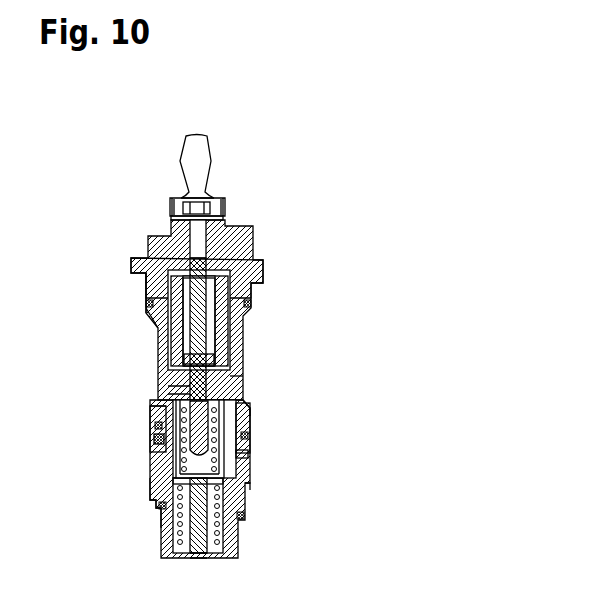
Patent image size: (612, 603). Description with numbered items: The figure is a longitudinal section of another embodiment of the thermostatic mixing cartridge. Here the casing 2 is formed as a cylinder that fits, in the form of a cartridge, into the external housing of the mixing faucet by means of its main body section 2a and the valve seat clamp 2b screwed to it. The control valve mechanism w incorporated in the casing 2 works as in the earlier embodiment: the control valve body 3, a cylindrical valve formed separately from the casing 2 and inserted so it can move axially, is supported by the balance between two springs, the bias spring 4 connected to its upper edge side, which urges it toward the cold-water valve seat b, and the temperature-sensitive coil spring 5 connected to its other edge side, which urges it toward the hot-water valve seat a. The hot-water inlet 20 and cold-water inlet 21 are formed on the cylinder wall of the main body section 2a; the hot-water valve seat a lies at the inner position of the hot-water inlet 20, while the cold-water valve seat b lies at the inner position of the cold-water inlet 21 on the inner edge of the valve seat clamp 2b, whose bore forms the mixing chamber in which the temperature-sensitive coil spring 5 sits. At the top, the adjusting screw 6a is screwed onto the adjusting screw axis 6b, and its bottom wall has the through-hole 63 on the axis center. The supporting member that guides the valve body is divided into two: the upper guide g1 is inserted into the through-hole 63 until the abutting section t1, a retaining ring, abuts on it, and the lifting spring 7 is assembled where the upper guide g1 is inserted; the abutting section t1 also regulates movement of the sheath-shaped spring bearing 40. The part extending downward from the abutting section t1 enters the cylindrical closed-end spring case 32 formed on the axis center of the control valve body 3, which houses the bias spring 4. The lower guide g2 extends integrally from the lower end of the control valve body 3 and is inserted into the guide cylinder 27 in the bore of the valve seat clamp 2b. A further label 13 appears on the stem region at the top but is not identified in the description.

The valve stem 13 is at (230, 262).
The adjusting screw axis 6b is at (238, 278).
The casing 2 is at (138, 276).
The main body section 2a is at (139, 302).
The adjusting screw 6a is at (225, 330).
The lifting spring 7 is at (165, 352).
The through-hole 63 is at (208, 362).
The abutting section t1 is at (232, 368).
The upper guide g1 is at (178, 380).
The hot-water valve seat a is at (240, 400).
The control valve mechanism w is at (150, 412).
The spring bearing 40 is at (150, 420).
The hot-water inlet 20 is at (243, 410).
The spring case 32 is at (148, 433).
The control valve body 3 is at (237, 430).
The bias spring 4 is at (150, 456).
The cold-water inlet 21 is at (238, 450).
The valve seat clamp 2b is at (145, 497).
The cold-water valve seat b is at (237, 478).
The temperature-sensitive coil spring 5 is at (205, 524).
The guide cylinder 27 is at (185, 520).
The lower guide g2 is at (228, 565).